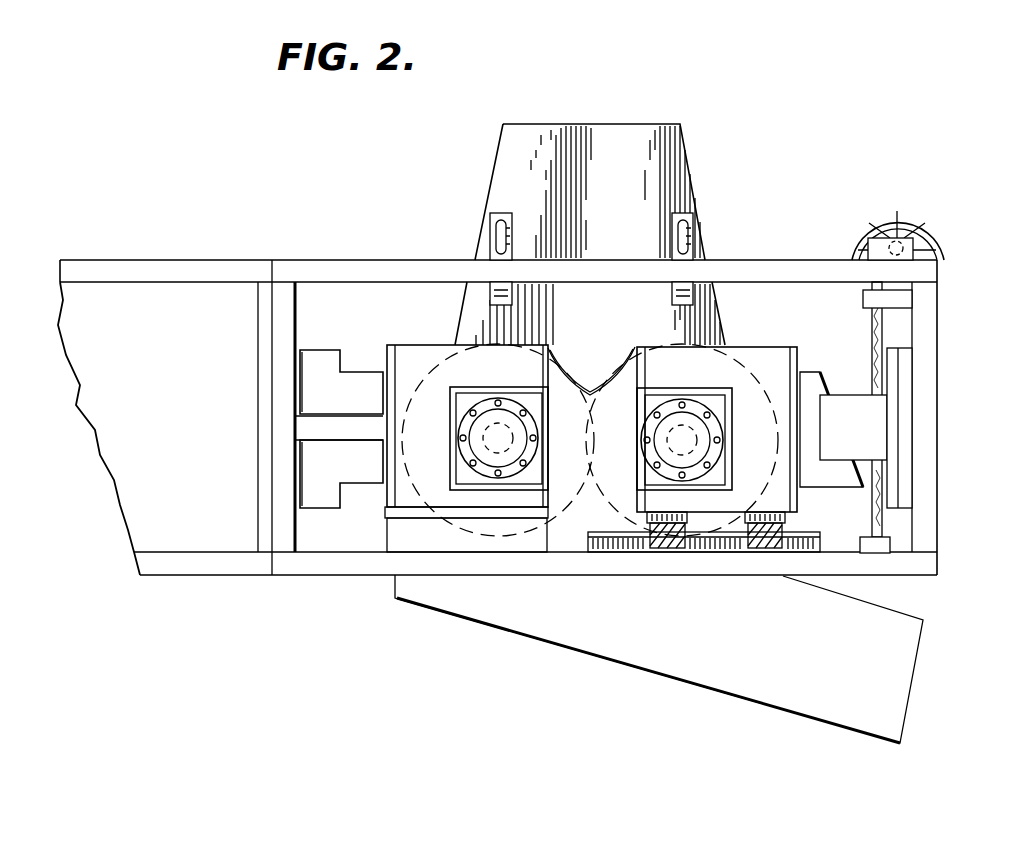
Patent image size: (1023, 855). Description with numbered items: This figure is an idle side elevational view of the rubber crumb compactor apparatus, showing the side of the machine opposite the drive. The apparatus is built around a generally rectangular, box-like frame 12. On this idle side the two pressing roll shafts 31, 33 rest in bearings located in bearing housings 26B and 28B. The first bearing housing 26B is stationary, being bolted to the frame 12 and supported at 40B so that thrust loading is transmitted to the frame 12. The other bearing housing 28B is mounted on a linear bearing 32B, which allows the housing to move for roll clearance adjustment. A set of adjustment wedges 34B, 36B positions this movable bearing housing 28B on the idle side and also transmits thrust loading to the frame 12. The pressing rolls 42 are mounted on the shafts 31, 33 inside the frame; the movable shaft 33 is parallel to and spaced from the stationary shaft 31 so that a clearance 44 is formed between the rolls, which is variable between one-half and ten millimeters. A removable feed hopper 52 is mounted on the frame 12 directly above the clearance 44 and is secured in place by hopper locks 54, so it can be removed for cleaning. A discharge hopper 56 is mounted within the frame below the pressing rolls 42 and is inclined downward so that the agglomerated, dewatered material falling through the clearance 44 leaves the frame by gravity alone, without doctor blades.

The frame 12 is at (351, 272).
The bearing housing 26B is at (407, 490).
The bearing housing 28B is at (772, 493).
The pressing roll shaft 31 is at (478, 443).
The pressing roll shaft 33 is at (653, 457).
The linear bearing 32B is at (700, 533).
The adjustment wedge 34B is at (846, 478).
The adjustment wedge 36B is at (872, 442).
The support 40B is at (315, 450).
The pressing rolls 42 is at (590, 390).
The clearance 44 is at (645, 525).
The feed hopper 52 is at (615, 171).
The hopper locks 54 is at (490, 245).
The discharge hopper 56 is at (840, 681).